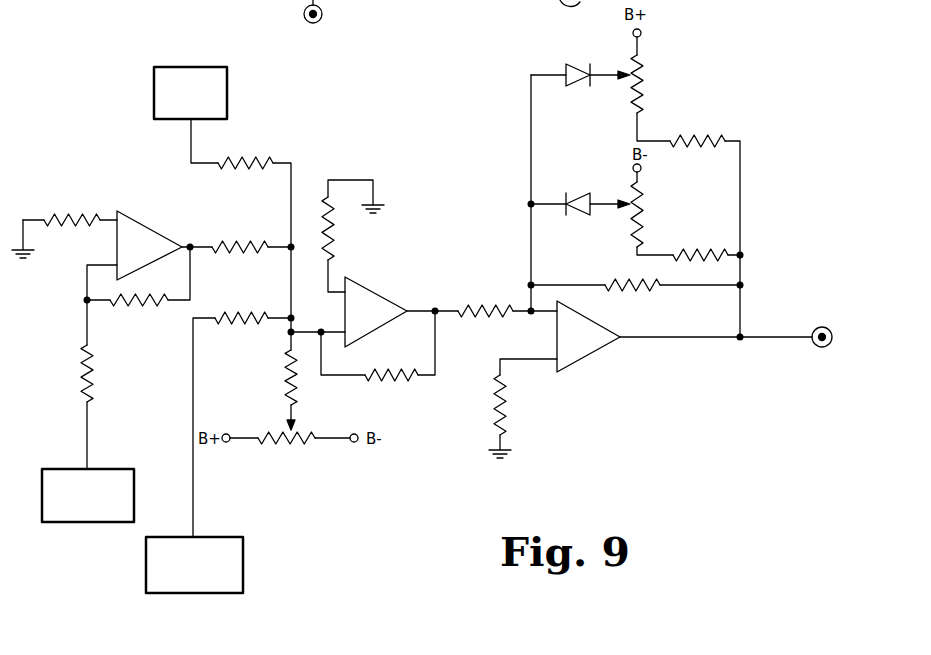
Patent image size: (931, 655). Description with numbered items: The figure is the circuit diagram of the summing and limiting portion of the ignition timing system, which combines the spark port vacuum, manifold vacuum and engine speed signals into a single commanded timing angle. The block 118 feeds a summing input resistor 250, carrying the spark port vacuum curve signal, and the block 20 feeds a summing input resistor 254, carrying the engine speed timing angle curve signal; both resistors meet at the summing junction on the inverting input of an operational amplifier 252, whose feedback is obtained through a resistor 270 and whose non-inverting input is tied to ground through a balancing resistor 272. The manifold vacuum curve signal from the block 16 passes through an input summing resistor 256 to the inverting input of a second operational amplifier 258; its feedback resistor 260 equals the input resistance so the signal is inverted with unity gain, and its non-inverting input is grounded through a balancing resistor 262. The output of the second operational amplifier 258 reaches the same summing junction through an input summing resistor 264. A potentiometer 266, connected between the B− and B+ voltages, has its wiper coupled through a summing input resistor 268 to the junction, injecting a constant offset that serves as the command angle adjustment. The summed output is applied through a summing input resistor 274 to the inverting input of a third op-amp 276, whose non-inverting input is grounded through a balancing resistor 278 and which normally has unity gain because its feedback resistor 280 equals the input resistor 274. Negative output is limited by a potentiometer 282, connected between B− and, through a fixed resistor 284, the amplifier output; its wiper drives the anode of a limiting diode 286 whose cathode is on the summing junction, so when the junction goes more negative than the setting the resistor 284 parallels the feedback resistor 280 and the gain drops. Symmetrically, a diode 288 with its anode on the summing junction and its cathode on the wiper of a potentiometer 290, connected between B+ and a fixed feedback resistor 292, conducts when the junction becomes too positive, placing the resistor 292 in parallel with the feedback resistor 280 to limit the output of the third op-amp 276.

The signal source block 20 is at (227, 95).
The block 16 is at (134, 483).
The block 118 is at (243, 556).
The summing input resistor 254 is at (256, 158).
The balancing resistor 262 is at (74, 214).
The second operational amplifier 258 is at (152, 230).
The input summing resistor 264 is at (238, 243).
The feedback resistor 260 is at (150, 306).
The input summing resistor 256 is at (96, 369).
The summing input resistor 250 is at (240, 314).
The summing input resistor 268 is at (285, 370).
The potentiometer 266 is at (275, 444).
The balancing resistor 272 is at (335, 229).
The operational amplifier 252 is at (378, 296).
The feedback resistor 270 is at (385, 382).
The summing input resistor 274 is at (491, 309).
The balancing resistor 278 is at (508, 402).
The third op-amp 276 is at (585, 360).
The feedback resistor 280 is at (640, 294).
The fixed resistor 284 is at (703, 250).
The potentiometer 282 is at (645, 194).
The limiting diode 286 is at (581, 192).
The potentiometer 290 is at (646, 91).
The diode 288 is at (566, 68).
The fixed feedback resistor 292 is at (701, 134).